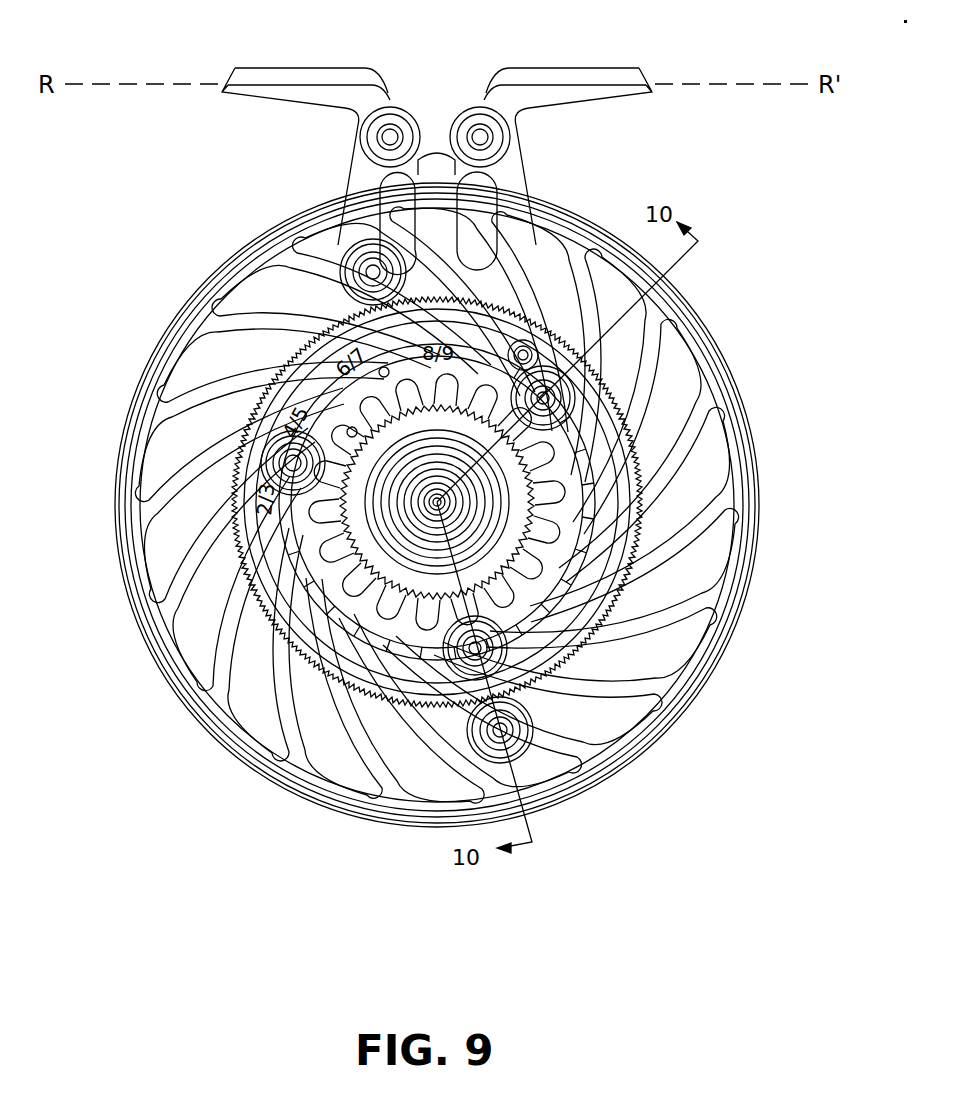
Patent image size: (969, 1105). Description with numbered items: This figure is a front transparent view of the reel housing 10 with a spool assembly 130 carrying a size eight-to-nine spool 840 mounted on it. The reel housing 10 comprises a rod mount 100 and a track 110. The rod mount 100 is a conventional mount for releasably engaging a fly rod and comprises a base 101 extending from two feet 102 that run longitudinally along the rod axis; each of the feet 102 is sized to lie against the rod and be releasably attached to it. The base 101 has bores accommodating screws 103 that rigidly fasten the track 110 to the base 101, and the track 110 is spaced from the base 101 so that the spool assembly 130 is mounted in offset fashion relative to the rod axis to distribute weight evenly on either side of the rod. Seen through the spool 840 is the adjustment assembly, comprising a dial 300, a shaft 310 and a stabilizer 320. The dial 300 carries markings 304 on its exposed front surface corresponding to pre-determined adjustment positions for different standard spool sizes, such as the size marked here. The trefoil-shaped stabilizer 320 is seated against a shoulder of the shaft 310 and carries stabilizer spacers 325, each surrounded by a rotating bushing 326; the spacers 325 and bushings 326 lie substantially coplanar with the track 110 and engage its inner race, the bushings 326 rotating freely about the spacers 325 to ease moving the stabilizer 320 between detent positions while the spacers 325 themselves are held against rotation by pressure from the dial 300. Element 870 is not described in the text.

The reel housing 10 is at (148, 212).
The rod mount 100 is at (417, 151).
The base 101 is at (443, 113).
The feet 102 is at (270, 66).
The screws 103 is at (483, 137).
The track 110 is at (363, 170).
The spool assembly 130 is at (750, 392).
The dial 300 is at (288, 365).
The markings 304 is at (262, 506).
The shaft 310 is at (455, 528).
The stabilizer 320 is at (508, 468).
The stabilizer spacers 325 is at (440, 655).
The bushings 326 is at (482, 655).
The spool 840 is at (702, 690).
The spool fastener boss 870 is at (506, 735).